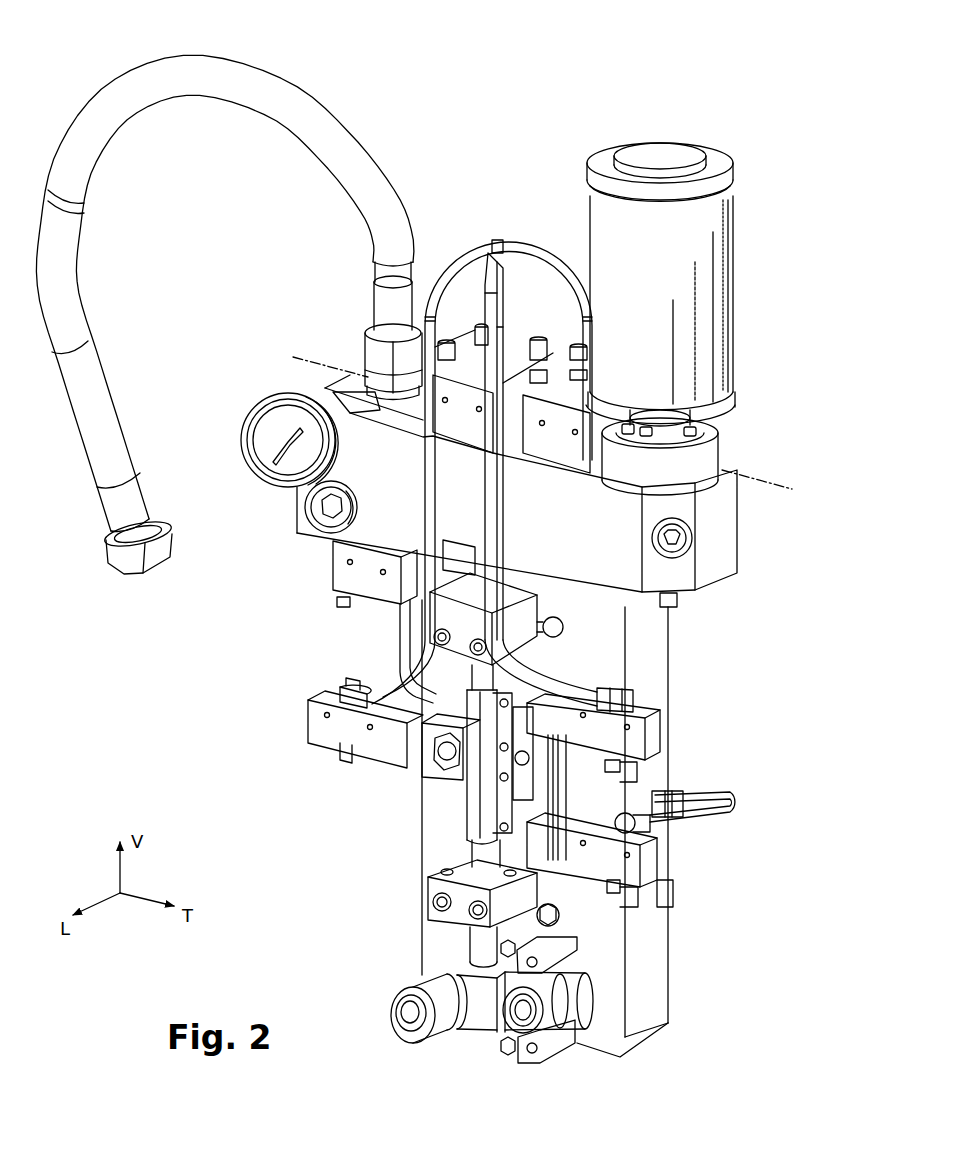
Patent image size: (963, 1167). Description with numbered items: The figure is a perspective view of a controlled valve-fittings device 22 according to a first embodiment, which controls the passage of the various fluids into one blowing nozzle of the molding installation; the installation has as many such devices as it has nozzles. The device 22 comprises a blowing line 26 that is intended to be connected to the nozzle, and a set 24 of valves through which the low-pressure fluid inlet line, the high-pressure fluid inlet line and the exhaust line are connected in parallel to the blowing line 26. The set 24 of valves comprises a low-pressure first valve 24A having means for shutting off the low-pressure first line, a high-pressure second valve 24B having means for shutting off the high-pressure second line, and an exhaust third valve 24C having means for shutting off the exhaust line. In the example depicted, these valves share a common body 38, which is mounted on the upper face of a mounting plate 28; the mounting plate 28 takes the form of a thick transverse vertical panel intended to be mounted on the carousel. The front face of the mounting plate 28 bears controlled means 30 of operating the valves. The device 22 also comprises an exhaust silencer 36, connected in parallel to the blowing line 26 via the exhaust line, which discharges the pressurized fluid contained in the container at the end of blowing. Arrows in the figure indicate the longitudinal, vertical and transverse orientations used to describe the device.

The controlled valve-fittings device 22 is at (538, 130).
The set of valves 24 is at (745, 558).
The low-pressure first valve 24A is at (517, 322).
The high-pressure second valve 24B is at (572, 338).
The exhaust third valve 24C is at (340, 576).
The blowing line 26 is at (316, 130).
The mounting plate 28 is at (650, 667).
The controlled means of operating the valves 30 is at (390, 797).
The exhaust silencer 36 is at (713, 257).
The common body 38 is at (715, 497).